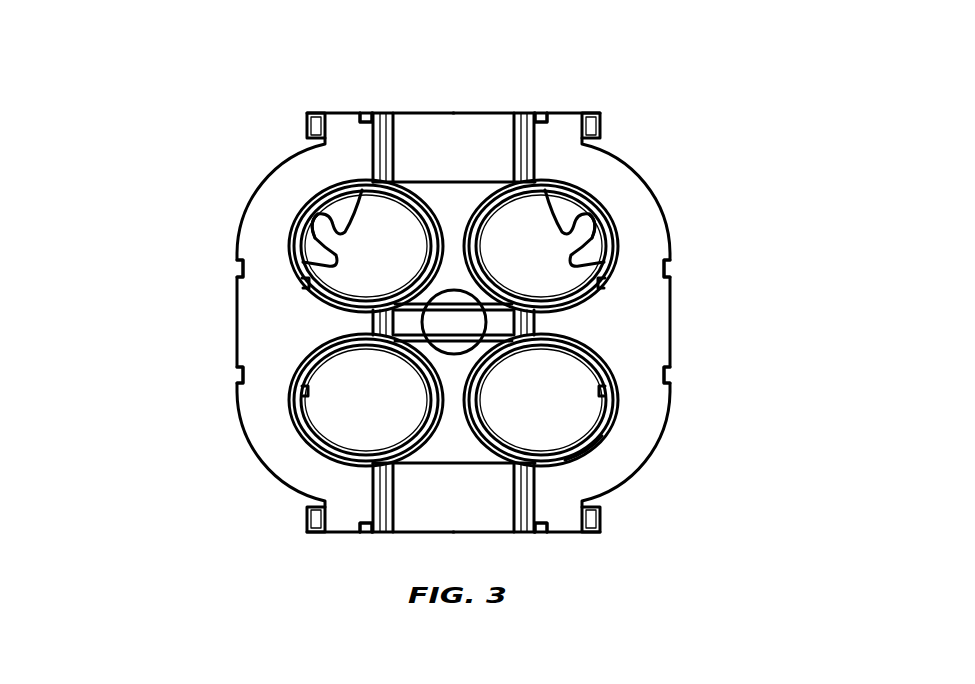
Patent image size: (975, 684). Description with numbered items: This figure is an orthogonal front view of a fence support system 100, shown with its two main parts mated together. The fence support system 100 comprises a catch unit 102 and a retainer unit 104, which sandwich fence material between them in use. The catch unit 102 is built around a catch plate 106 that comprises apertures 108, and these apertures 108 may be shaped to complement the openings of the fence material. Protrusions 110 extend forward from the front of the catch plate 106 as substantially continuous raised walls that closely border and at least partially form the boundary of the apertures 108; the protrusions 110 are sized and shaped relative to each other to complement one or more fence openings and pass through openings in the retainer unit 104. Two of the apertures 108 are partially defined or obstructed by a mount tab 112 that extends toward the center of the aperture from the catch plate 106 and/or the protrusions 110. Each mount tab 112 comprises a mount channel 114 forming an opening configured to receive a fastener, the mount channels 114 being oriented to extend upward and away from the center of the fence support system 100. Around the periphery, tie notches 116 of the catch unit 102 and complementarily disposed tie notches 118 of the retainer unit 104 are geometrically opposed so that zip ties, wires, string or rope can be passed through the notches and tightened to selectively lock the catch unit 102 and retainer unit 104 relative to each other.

The fence support system 100 is at (680, 116).
The catch unit 102 is at (462, 452).
The retainer unit 104 is at (618, 464).
The catch plate 106 is at (452, 205).
The apertures 108 is at (323, 437).
The protrusions 110 is at (300, 228).
The mount tab 112 is at (335, 207).
The mount channel 114 is at (325, 220).
The tie notches 116 is at (455, 354).
The tie notches 118 is at (296, 268).